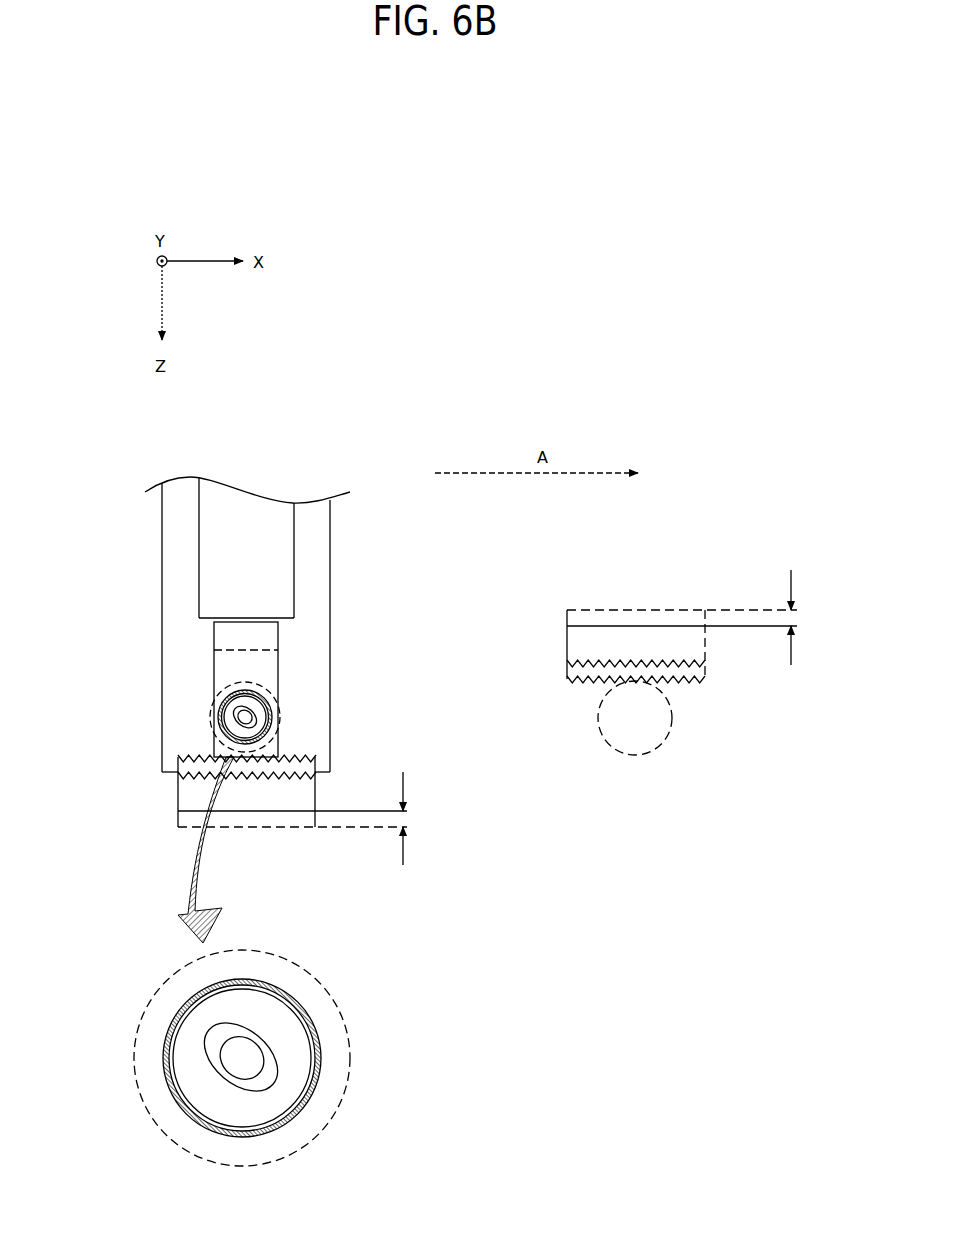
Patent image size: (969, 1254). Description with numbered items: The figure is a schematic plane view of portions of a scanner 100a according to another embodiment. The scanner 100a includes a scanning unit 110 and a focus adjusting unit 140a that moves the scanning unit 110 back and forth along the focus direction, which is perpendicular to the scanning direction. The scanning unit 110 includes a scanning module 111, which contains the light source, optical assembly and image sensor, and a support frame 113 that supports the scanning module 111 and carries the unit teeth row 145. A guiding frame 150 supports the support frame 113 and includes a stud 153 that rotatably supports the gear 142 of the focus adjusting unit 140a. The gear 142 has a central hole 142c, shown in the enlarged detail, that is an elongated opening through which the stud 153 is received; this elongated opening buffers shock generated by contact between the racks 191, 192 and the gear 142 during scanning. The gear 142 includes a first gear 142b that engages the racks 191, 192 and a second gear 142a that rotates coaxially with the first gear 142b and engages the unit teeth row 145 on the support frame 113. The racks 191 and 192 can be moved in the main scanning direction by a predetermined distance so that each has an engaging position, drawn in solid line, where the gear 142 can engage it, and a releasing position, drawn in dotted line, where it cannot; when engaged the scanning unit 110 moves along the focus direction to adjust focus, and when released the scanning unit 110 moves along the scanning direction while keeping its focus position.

The scanner 100a is at (723, 384).
The scanning unit 110 is at (163, 617).
The scanning module 111 is at (207, 527).
The support frame 113 is at (218, 660).
The guiding frame 150 is at (164, 678).
The stud 153 is at (238, 722).
The unit teeth row 145 is at (262, 686).
The second gear 142a is at (272, 700).
The first gear 142b is at (280, 717).
The gear 142 is at (431, 888).
The focus adjusting unit 140a is at (366, 899).
The central hole 142c is at (237, 1023).
The rack 191 is at (267, 800).
The rack 192 is at (607, 634).